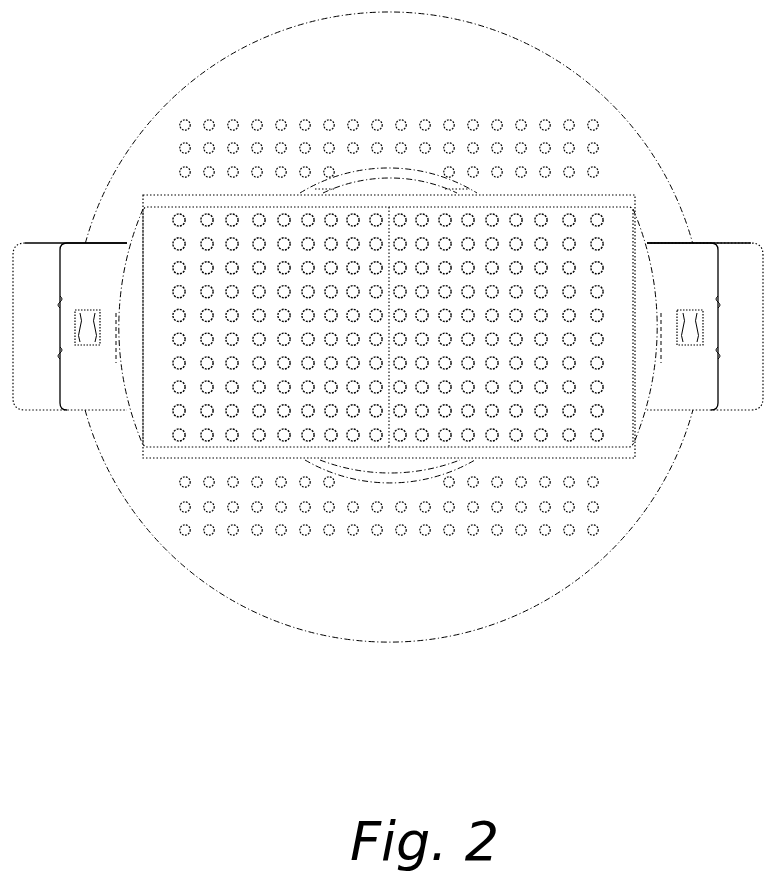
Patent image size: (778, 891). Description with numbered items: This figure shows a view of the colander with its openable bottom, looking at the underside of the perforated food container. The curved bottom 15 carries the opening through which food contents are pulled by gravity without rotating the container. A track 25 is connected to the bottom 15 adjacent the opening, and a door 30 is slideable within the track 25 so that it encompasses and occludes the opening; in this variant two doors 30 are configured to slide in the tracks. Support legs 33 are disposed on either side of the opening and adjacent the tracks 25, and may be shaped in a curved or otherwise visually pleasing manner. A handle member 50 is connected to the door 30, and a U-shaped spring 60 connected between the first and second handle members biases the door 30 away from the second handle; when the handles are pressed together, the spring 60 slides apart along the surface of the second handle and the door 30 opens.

The curved bottom 15 is at (336, 512).
The track 25 is at (586, 203).
The door 30 is at (147, 228).
The support legs 33 is at (417, 478).
The handle member 50 is at (95, 395).
The U-shaped spring 60 is at (690, 335).